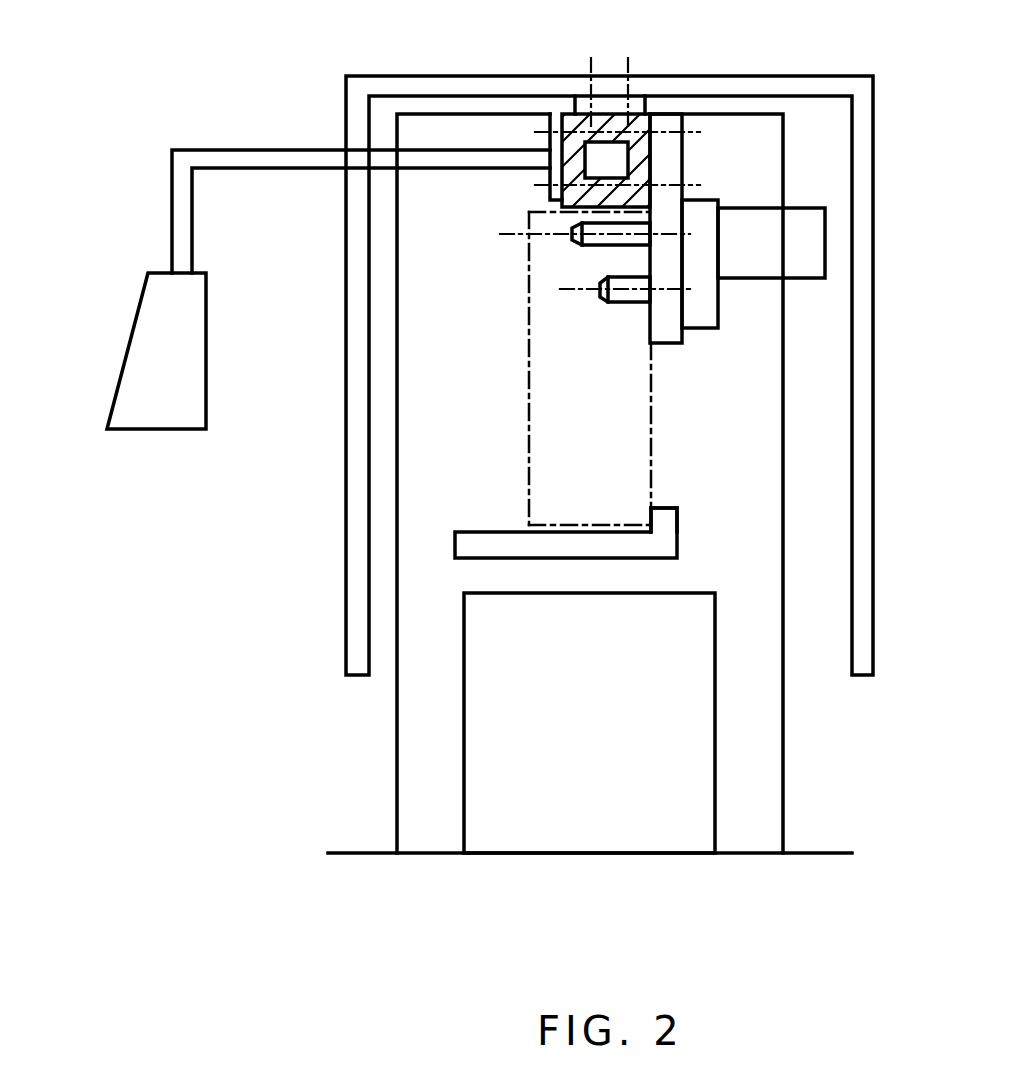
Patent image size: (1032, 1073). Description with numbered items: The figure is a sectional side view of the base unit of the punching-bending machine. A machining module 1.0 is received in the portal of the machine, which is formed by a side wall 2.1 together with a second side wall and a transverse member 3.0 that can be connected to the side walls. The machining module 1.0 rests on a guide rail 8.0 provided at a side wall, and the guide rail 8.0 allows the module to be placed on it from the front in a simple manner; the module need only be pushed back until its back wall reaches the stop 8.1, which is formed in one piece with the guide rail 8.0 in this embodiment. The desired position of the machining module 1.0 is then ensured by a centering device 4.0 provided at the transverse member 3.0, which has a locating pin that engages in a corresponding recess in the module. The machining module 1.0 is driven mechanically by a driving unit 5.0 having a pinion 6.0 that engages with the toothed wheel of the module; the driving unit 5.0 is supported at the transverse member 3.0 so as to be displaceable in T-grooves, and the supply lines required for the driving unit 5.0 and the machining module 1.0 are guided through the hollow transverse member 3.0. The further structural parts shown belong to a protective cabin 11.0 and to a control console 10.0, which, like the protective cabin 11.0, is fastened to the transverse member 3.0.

The machining module 1.0 is at (551, 503).
The side wall 2.1 is at (433, 718).
The transverse member 3.0 is at (630, 130).
The centering device 4.0 is at (572, 236).
The driving unit 5.0 is at (808, 253).
The pinion 6.0 is at (617, 300).
The guide rail 8.0 is at (473, 542).
The stop 8.1 is at (663, 532).
The control console 10.0 is at (165, 353).
The protective cabin 11.0 is at (477, 85).